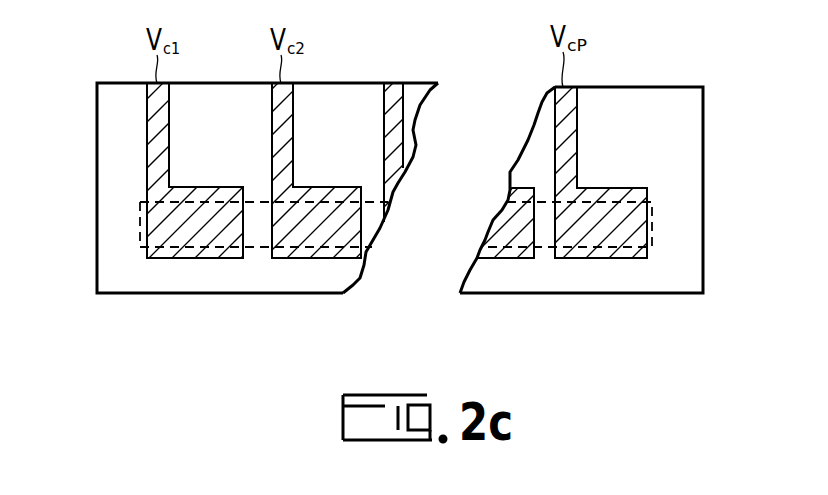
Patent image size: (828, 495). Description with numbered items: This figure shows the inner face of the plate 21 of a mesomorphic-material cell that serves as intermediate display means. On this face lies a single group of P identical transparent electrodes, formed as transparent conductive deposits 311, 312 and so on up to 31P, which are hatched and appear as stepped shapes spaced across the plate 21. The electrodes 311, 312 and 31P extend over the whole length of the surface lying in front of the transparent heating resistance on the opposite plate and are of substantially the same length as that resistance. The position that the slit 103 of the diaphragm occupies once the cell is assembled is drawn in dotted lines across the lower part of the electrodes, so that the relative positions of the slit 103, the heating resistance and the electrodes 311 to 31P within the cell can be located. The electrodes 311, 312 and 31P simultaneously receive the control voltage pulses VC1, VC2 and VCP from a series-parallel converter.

The plate 21 is at (633, 93).
The transparent conductive deposit 311 is at (178, 258).
The transparent conductive deposit 312 is at (293, 258).
The transparent conductive deposit 31P is at (613, 258).
The slit 103 is at (521, 209).